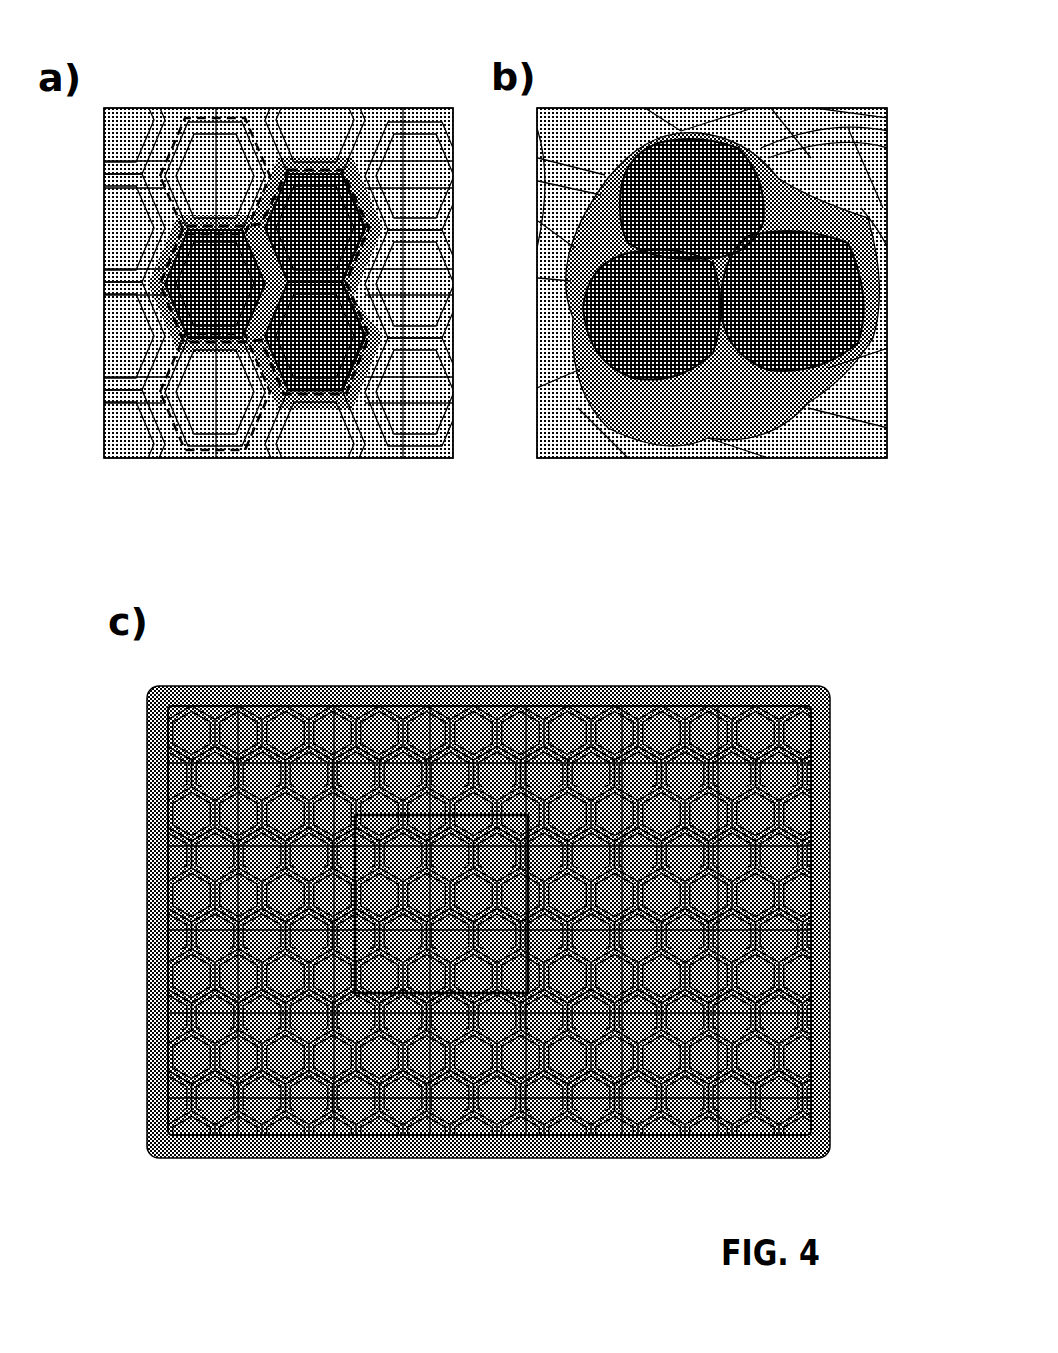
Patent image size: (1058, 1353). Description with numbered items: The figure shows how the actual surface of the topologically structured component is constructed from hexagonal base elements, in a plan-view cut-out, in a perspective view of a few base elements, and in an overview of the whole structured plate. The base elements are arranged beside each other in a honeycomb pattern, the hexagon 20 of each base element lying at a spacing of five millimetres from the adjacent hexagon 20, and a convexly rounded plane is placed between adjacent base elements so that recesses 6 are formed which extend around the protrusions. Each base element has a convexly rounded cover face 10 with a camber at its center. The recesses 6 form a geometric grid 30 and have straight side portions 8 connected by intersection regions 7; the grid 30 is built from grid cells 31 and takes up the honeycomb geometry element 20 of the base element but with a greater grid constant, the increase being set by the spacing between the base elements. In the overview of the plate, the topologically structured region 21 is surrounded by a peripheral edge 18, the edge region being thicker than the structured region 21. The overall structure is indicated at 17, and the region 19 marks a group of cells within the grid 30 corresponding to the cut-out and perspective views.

The recess 6 is at (357, 357).
The intersection region 7 is at (340, 383).
The straight side portion 8 is at (313, 393).
The cover face 10 is at (305, 200).
The honeycomb structure 17 is at (553, 873).
The peripheral edge 18 is at (495, 685).
The cell region 19 is at (403, 800).
The hexagon 20 is at (353, 202).
The topologically structured region 21 is at (763, 800).
The grid 30 is at (343, 270).
The grid cell 31 is at (157, 433).